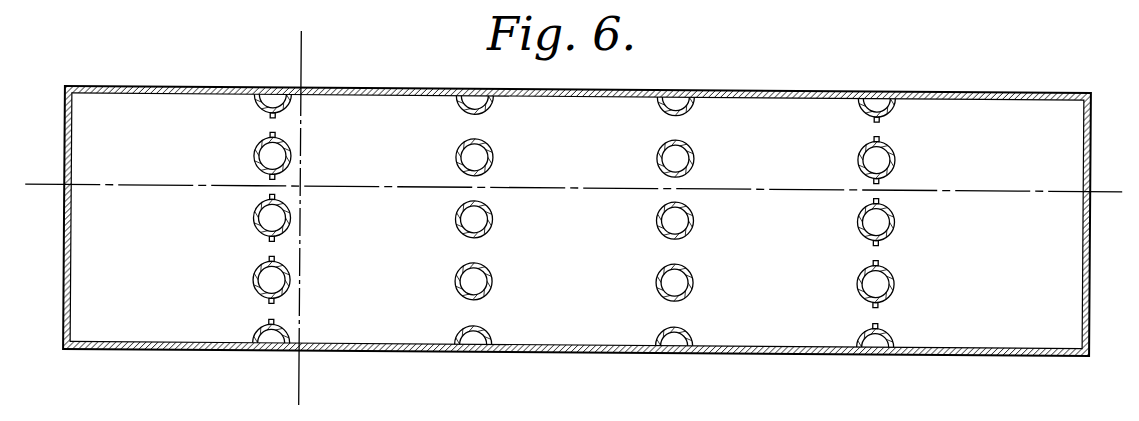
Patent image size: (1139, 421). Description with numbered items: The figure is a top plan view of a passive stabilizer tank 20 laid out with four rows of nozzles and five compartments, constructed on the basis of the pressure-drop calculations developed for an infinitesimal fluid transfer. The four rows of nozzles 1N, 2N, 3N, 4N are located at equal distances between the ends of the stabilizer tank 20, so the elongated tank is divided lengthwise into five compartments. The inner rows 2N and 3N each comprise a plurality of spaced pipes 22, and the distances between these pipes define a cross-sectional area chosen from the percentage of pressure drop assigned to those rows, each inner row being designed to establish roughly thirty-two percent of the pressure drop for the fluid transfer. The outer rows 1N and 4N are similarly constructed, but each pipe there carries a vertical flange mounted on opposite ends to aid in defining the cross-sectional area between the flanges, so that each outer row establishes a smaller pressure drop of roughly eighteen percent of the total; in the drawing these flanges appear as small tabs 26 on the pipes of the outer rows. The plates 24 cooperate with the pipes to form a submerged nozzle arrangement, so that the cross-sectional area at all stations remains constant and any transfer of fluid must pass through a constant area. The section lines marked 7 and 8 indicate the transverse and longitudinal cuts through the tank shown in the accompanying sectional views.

The passive stabilizer tank 20 is at (141, 80).
The spaced pipes 22 is at (460, 270).
The plate 24 is at (253, 155).
The locating tabs 26 is at (268, 134).
The first row of nozzles 1N is at (273, 77).
The second row of nozzles 2N is at (474, 81).
The third row of nozzles 3N is at (675, 82).
The fourth row of nozzles 4N is at (876, 84).
The section line 7- 7 is at (1101, 180).
The section line 8- 8 is at (260, 382).